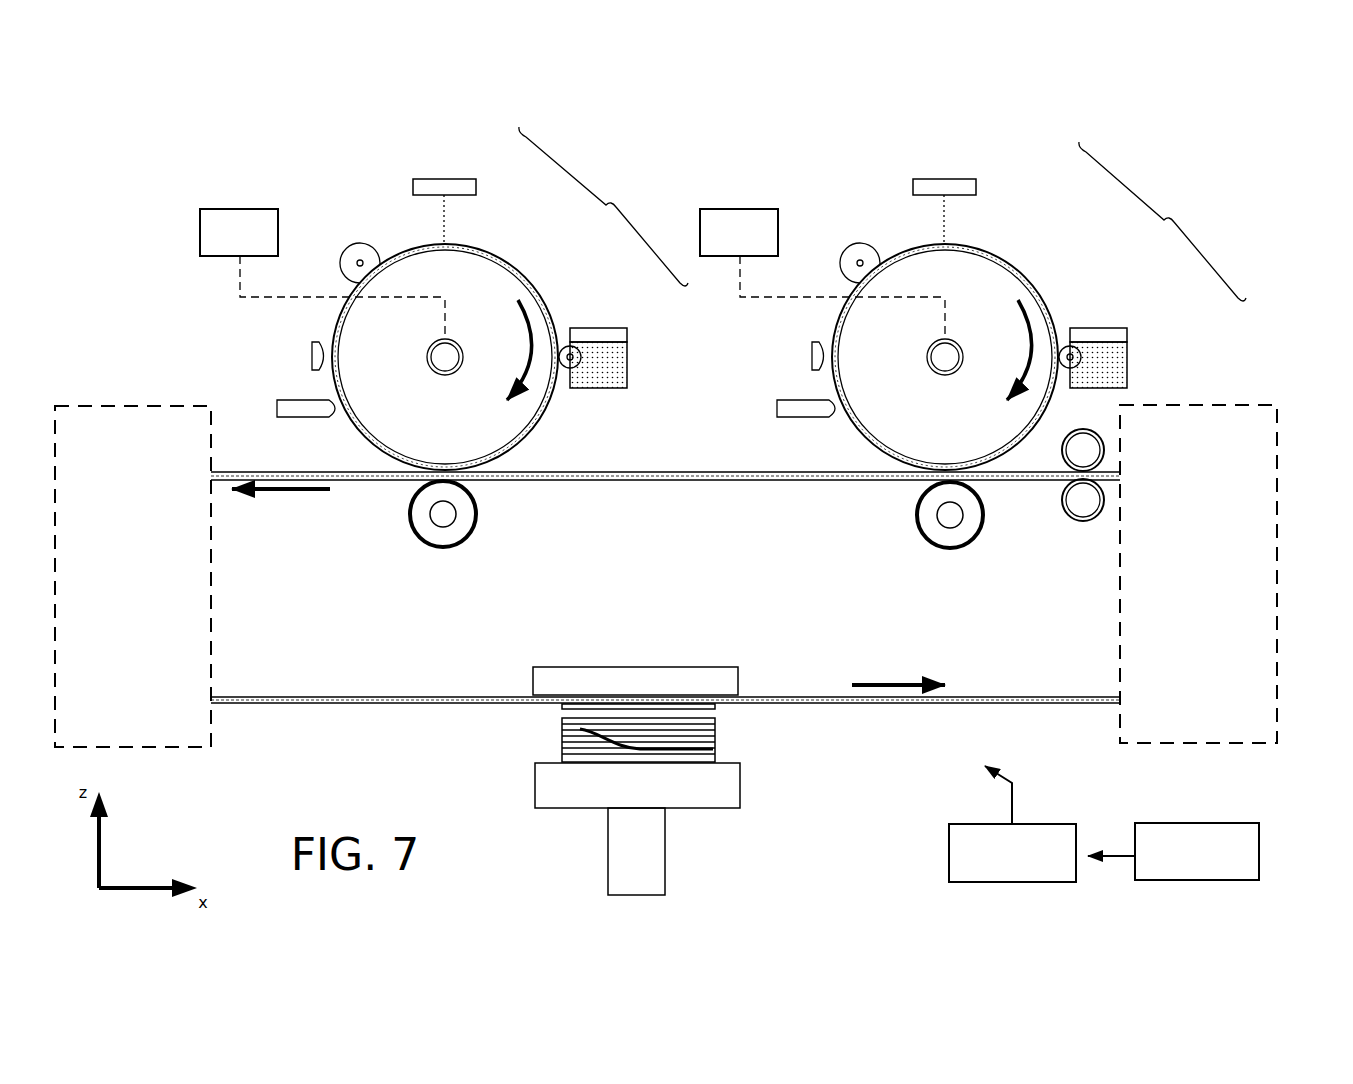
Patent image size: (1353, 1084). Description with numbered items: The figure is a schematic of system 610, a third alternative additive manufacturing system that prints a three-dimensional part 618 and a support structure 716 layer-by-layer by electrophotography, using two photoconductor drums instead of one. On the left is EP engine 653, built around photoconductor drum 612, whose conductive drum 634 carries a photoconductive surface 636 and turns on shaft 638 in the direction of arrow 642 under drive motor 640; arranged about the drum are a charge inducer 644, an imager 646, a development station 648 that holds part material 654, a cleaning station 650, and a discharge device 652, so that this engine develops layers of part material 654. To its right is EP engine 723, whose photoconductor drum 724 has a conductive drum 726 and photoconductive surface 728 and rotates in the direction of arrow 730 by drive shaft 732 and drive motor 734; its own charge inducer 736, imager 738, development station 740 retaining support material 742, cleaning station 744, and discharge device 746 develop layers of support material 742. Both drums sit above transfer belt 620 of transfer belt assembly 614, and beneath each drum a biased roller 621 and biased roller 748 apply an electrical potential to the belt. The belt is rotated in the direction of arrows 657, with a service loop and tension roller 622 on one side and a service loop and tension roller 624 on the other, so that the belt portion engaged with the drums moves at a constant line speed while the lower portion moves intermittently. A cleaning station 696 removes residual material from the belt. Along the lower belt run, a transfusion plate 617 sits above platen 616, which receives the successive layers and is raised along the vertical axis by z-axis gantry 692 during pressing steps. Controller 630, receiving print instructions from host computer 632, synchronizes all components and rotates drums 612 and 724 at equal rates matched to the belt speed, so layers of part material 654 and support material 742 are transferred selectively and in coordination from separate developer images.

The system 610 is at (168, 148).
The photoconductor drum 612 is at (517, 260).
The transfer belt assembly 614 is at (1297, 672).
The platen 616 is at (535, 772).
The transfusion plate 617 is at (740, 679).
The 3D part 618 is at (715, 725).
The transfer belt 620 is at (682, 490).
The biased roller 621 is at (470, 507).
The tension roller 622 is at (133, 576).
The tension roller 624 is at (1198, 574).
The controller 630 is at (948, 838).
The host computer 632 is at (1182, 823).
The conductive drum 634 is at (427, 429).
The photoconductive surface 636 is at (484, 248).
The shaft 638 is at (437, 355).
The drive motor 640 is at (233, 209).
The rotation direction arrow 642 is at (527, 320).
The charge inducer 644 is at (372, 242).
The imager 646 is at (413, 188).
The development station 648 is at (593, 318).
The cleaning station 650 is at (333, 417).
The discharge device 652 is at (312, 347).
The EP engine 653 is at (603, 206).
The part material 654 is at (585, 386).
The rotational direction arrows 657 is at (270, 494).
The z-axis gantry 692 is at (658, 838).
The cleaning station 696 is at (1080, 528).
The support structure 716 is at (562, 745).
The EP engine 723 is at (1162, 221).
The photoconductor drum 724 is at (973, 306).
The conductive drum 726 is at (945, 357).
The photoconductive surface 728 is at (945, 333).
The rotation direction arrow 730 is at (1005, 350).
The drive shaft 732 is at (925, 348).
The drive motor 734 is at (822, 234).
The charge inducer 736 is at (843, 247).
The imager 738 is at (913, 194).
The development station 740 is at (1140, 319).
The support material 742 is at (1137, 365).
The cleaning station 744 is at (788, 422).
The discharge device 746 is at (785, 361).
The biased roller 748 is at (976, 508).